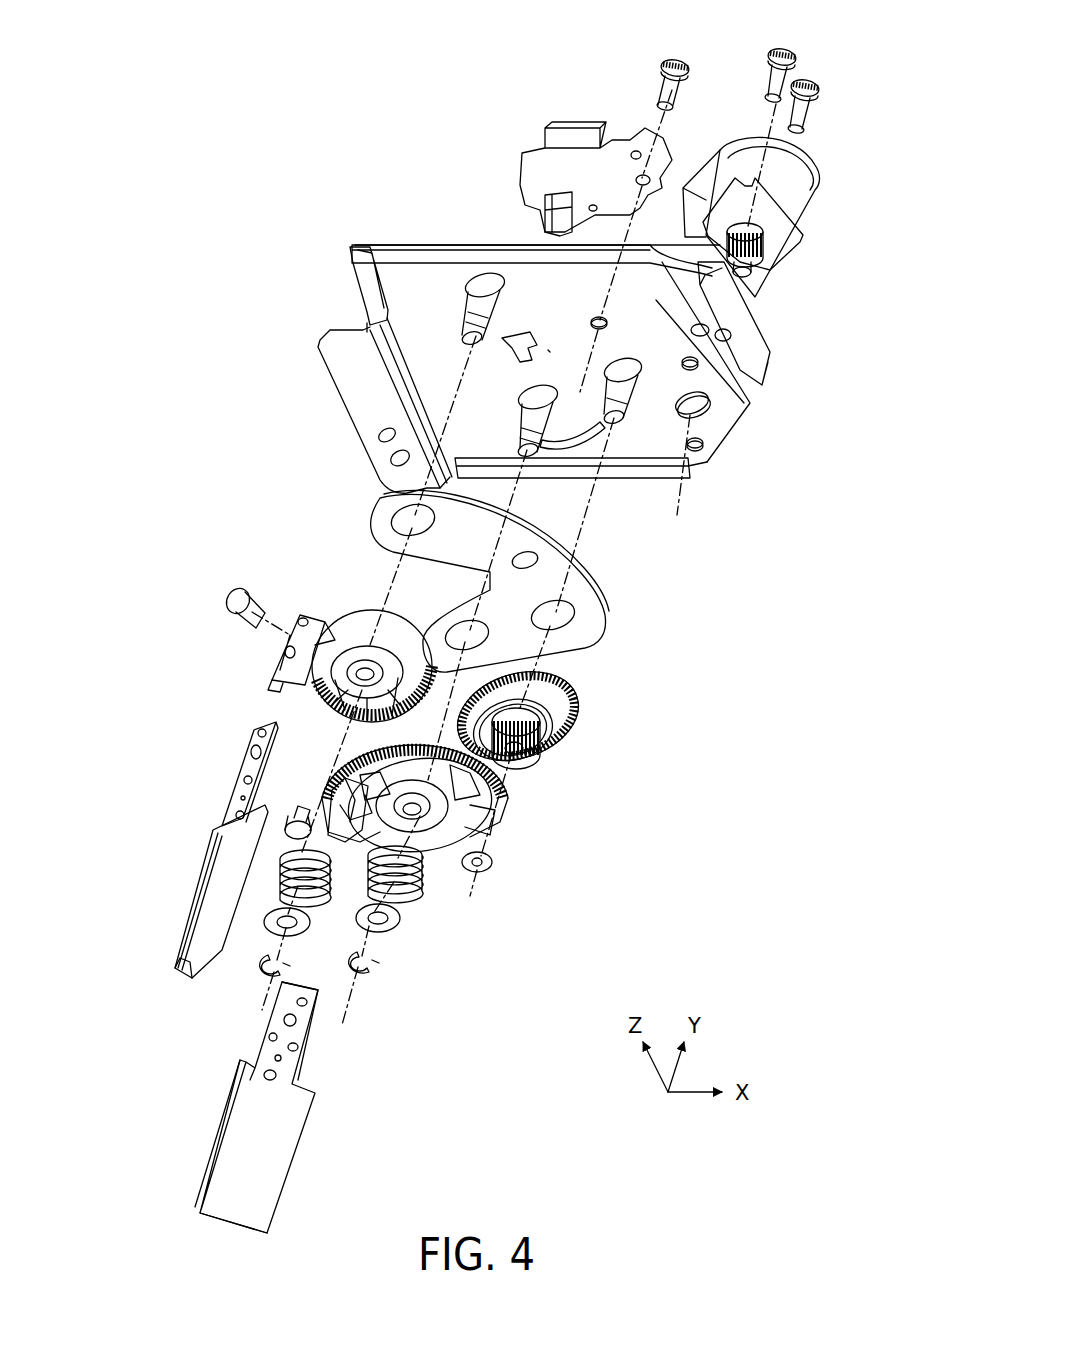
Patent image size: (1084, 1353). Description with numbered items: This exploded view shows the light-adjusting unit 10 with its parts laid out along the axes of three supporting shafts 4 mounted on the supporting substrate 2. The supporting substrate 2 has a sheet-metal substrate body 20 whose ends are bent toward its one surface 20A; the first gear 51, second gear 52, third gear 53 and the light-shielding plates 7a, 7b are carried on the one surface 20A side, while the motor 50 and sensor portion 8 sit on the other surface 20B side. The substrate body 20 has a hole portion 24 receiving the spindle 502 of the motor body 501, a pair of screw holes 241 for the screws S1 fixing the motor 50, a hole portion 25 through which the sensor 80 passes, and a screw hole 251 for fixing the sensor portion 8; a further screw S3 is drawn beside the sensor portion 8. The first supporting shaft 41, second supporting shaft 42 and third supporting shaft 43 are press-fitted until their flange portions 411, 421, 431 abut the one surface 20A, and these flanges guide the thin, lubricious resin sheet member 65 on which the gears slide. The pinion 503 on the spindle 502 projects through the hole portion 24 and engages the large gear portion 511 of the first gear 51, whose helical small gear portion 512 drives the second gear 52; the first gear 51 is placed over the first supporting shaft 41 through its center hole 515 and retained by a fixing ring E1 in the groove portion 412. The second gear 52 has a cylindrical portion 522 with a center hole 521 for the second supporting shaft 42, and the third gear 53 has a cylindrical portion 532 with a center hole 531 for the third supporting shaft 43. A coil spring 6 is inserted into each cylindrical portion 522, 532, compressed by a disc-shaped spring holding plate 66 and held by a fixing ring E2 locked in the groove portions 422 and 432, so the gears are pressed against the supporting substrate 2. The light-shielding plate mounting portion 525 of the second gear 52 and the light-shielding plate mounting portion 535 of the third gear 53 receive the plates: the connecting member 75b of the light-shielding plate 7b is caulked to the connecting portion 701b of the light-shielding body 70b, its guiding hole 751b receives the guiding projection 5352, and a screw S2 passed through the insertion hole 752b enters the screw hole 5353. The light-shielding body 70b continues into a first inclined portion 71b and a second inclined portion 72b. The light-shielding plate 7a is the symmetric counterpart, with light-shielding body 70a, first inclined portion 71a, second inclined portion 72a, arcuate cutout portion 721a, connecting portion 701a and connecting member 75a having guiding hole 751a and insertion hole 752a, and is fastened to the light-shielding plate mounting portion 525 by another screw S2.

The light-adjusting unit 10 is at (188, 184).
The supporting substrate 2 is at (772, 340).
The supporting shafts 4 is at (533, 384).
The coil springs 6 is at (285, 862).
The sensor portion 8 is at (569, 134).
The sensor 80 is at (540, 214).
The substrate body 20 is at (400, 332).
The one surface 20A is at (358, 285).
The other surface 20B is at (410, 243).
The hole portion 24 is at (705, 402).
The screw holes 241 is at (698, 364).
The hole portion 25 is at (520, 340).
The screw hole 251 is at (602, 318).
The first supporting shaft 41 is at (636, 412).
The flange portion 411 is at (622, 372).
The groove portion 412 is at (616, 422).
The second supporting shaft 42 is at (527, 432).
The flange portion 421 is at (552, 405).
The groove portion 422 is at (532, 455).
The third supporting shaft 43 is at (495, 318).
The flange portion 431 is at (503, 284).
The groove portion 432 is at (470, 335).
The motor 50 is at (796, 217).
The motor body 501 is at (795, 192).
The spindle 502 is at (752, 275).
The pinion 503 is at (765, 245).
The first gear 51 is at (588, 722).
The large gear portion 511 is at (575, 718).
The small gear portion 512 is at (542, 745).
The center hole 515 is at (522, 755).
The second gear 52 is at (477, 822).
The center hole 521 is at (450, 815).
The cylindrical portion 522 is at (470, 805).
The light-shielding plate mounting portion 525 is at (348, 838).
The third gear 53 is at (317, 676).
The center hole 531 is at (372, 645).
The cylindrical portion 532 is at (356, 660).
The light-shielding plate mounting portion 535 is at (252, 603).
The guiding projection 5352 is at (300, 620).
The screw hole 5353 is at (286, 653).
The sheet member 65 is at (598, 590).
The spring holding plate 66 is at (272, 935).
The light-shielding plate 7a is at (274, 1120).
The light-shielding body 70a is at (270, 1192).
The first inclined portion 71a is at (205, 1212).
The second inclined portion 72a is at (203, 1183).
The cutout portion 721a is at (220, 1125).
The connecting member 75a is at (262, 1036).
The guiding hole 751a is at (296, 1003).
The insertion hole 752a is at (284, 1020).
The connecting portion 701a is at (300, 1070).
The light-shielding plate 7b is at (216, 836).
The light-shielding body 70b is at (225, 884).
The first inclined portion 71b is at (196, 938).
The second inclined portion 72b is at (182, 974).
The connecting member 75b is at (234, 759).
The guiding hole 751b is at (260, 730).
The insertion hole 752b is at (252, 752).
The connecting portion 701b is at (255, 762).
The fixing ring E1 is at (478, 874).
The fixing ring E2 is at (290, 968).
The screws S1 is at (797, 54).
The screw S2 is at (238, 590).
The screw S3 is at (682, 60).